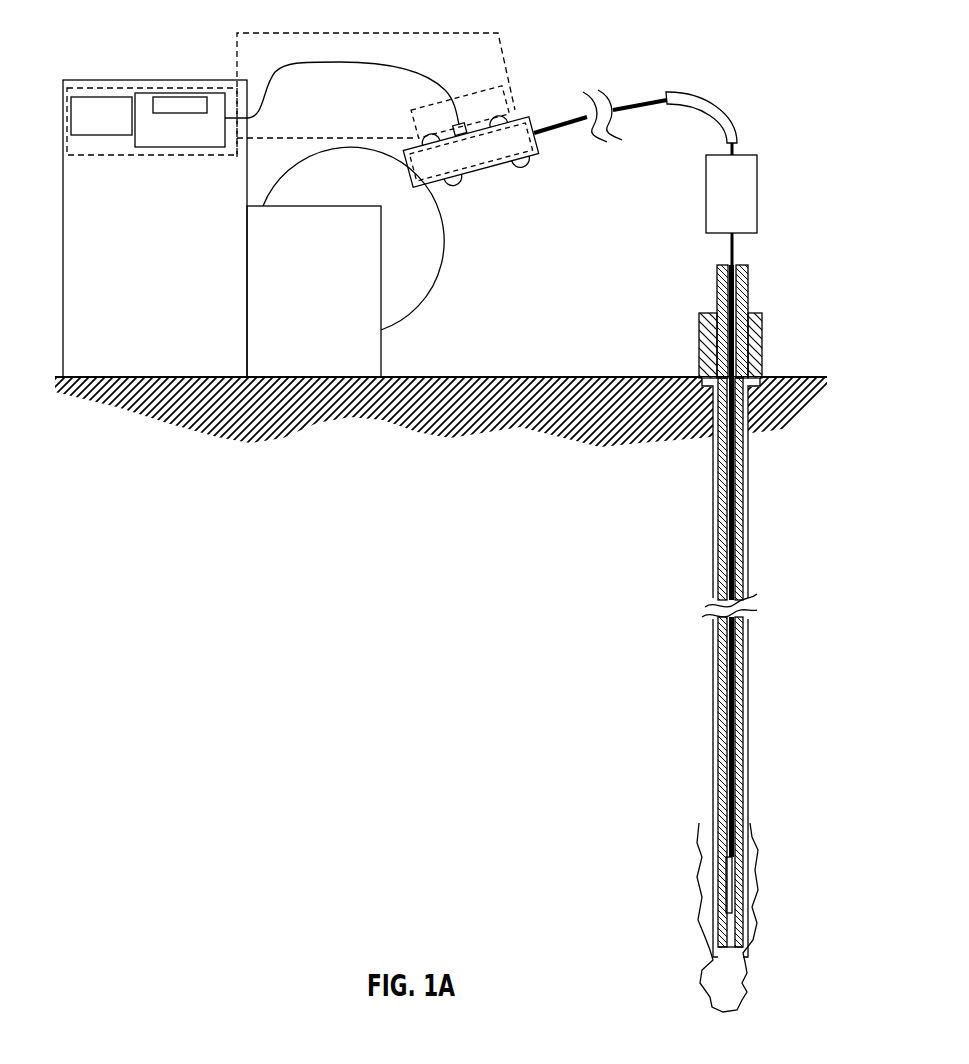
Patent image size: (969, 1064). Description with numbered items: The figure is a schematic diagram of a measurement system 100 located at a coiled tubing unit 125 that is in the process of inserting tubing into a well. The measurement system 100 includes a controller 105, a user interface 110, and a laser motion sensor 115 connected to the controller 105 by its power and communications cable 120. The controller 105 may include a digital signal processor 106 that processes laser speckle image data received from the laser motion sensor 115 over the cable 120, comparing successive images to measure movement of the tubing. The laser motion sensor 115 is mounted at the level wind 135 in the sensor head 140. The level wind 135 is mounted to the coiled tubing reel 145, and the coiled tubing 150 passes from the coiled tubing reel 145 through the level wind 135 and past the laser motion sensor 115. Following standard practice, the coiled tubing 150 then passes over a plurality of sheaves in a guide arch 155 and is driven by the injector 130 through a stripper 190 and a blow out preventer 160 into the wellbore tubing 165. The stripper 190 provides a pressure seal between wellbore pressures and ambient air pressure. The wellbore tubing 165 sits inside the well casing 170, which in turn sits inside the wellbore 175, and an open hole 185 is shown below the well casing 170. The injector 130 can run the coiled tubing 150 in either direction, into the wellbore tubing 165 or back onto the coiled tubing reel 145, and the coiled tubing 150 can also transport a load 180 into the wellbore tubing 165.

The measurement system 100 is at (112, 84).
The coiled tubing unit 125 is at (150, 78).
The controller 105 is at (178, 146).
The digital signal processor 106 is at (173, 100).
The user interface 110 is at (103, 136).
The laser motion sensor 115 is at (447, 130).
The power and communications cable 120 is at (333, 63).
The injector 130 is at (706, 197).
The level wind 135 is at (507, 160).
The sensor head 140 is at (483, 82).
The coiled tubing reel 145 is at (443, 232).
The coiled tubing 150 is at (647, 100).
The guide arch 155 is at (725, 100).
The blow out preventer 160 is at (699, 320).
The wellbore tubing 165 is at (720, 527).
The well casing 170 is at (713, 570).
The wellbore 175 is at (700, 897).
The load 180 is at (740, 878).
The open hole 185 is at (728, 980).
The stripper 190 is at (748, 270).